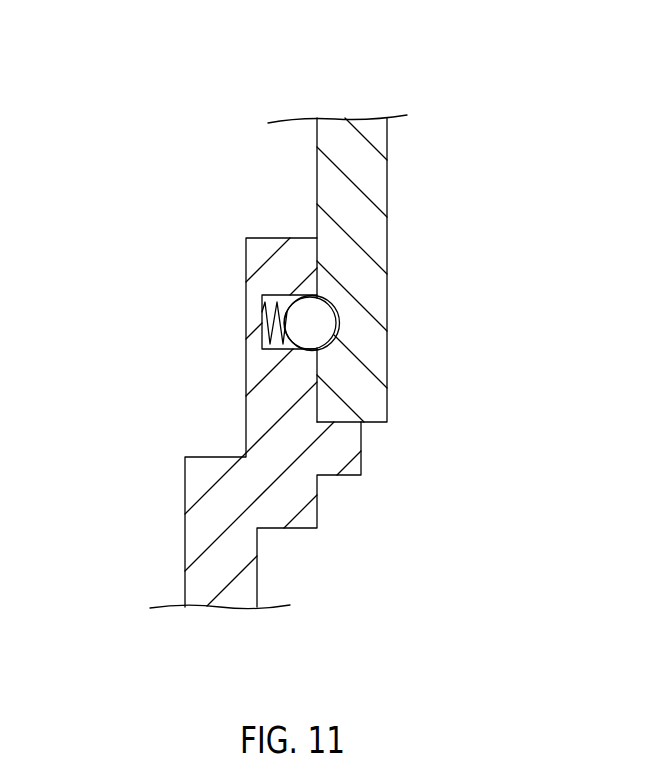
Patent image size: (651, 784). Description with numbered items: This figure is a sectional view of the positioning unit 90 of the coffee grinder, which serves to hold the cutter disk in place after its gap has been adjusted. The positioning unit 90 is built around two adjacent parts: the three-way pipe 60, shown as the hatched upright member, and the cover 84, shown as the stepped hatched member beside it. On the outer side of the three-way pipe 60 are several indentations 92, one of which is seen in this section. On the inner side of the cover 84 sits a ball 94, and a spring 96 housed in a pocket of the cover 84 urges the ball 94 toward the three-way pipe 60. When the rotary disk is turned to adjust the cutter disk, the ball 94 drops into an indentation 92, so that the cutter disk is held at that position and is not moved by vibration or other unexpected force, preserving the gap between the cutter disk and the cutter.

The positioning unit 90 is at (95, 98).
The three-way pipe 60 is at (388, 195).
The cover 84 is at (185, 532).
The indentation 92 is at (340, 323).
The ball 94 is at (305, 310).
The spring 96 is at (263, 313).